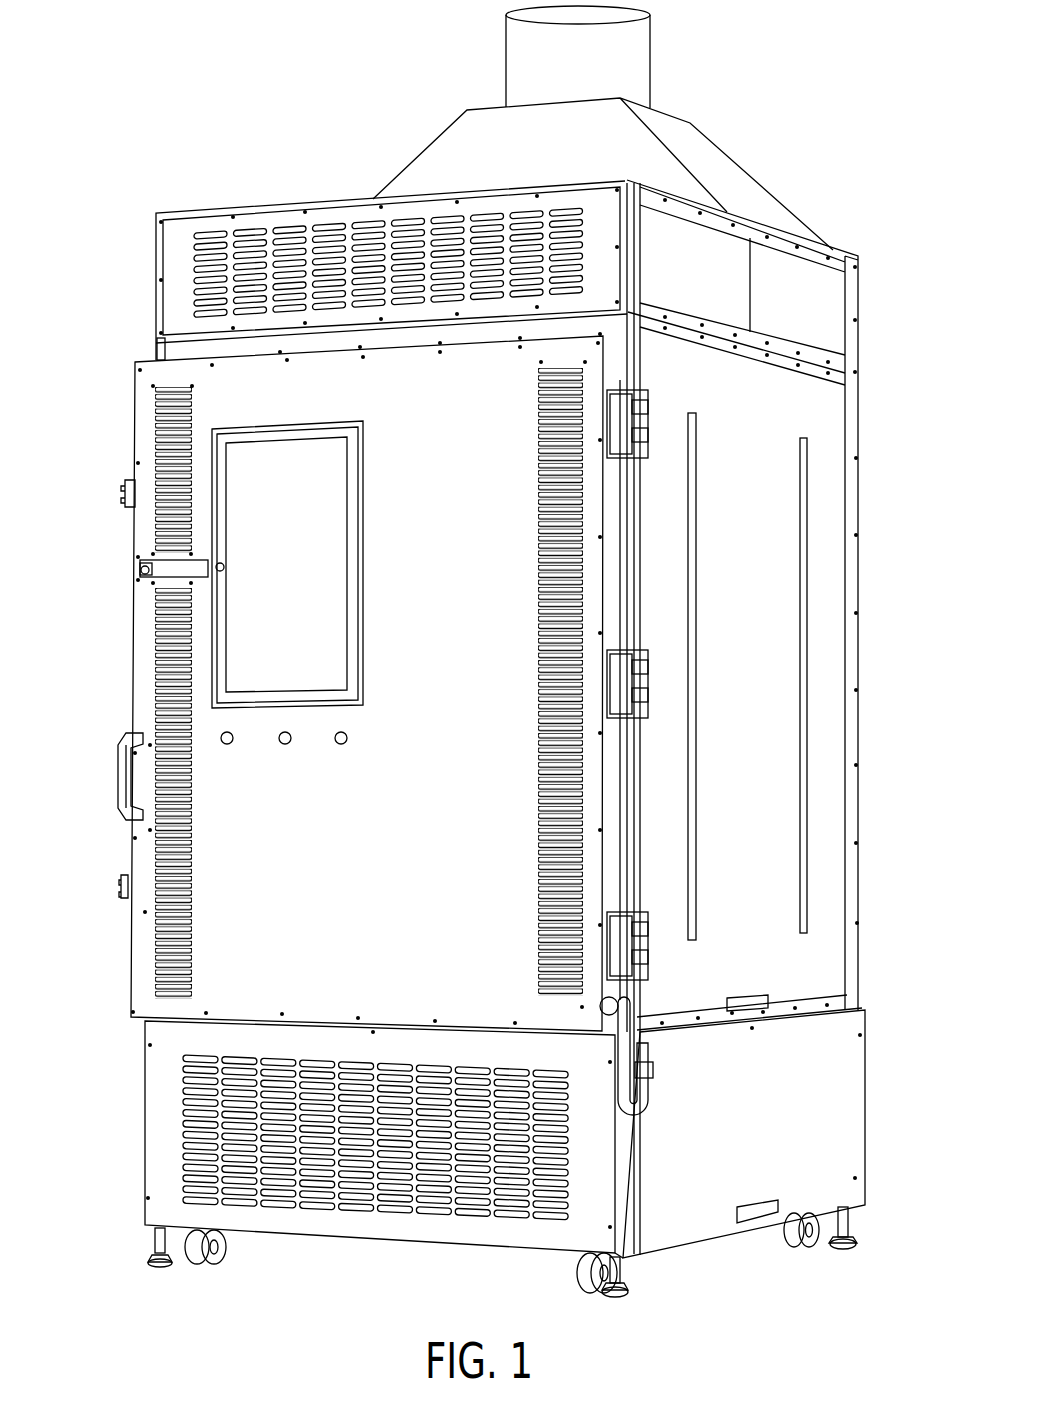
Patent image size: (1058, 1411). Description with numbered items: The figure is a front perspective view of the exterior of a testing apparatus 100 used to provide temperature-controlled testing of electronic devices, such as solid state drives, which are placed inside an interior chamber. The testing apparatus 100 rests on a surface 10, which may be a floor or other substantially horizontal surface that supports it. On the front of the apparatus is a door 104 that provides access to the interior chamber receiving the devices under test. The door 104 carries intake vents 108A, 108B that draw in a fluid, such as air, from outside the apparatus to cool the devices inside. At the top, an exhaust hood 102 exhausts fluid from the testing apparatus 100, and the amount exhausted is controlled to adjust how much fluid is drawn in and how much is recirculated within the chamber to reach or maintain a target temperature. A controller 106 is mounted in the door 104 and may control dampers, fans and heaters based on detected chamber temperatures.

The testing apparatus 100 is at (148, 116).
The exhaust hood 102 is at (732, 175).
The door 104 is at (217, 817).
The controller 106 is at (250, 625).
The intake vent 108A is at (155, 592).
The intake vent 108B is at (583, 527).
The surface 10 is at (748, 1287).